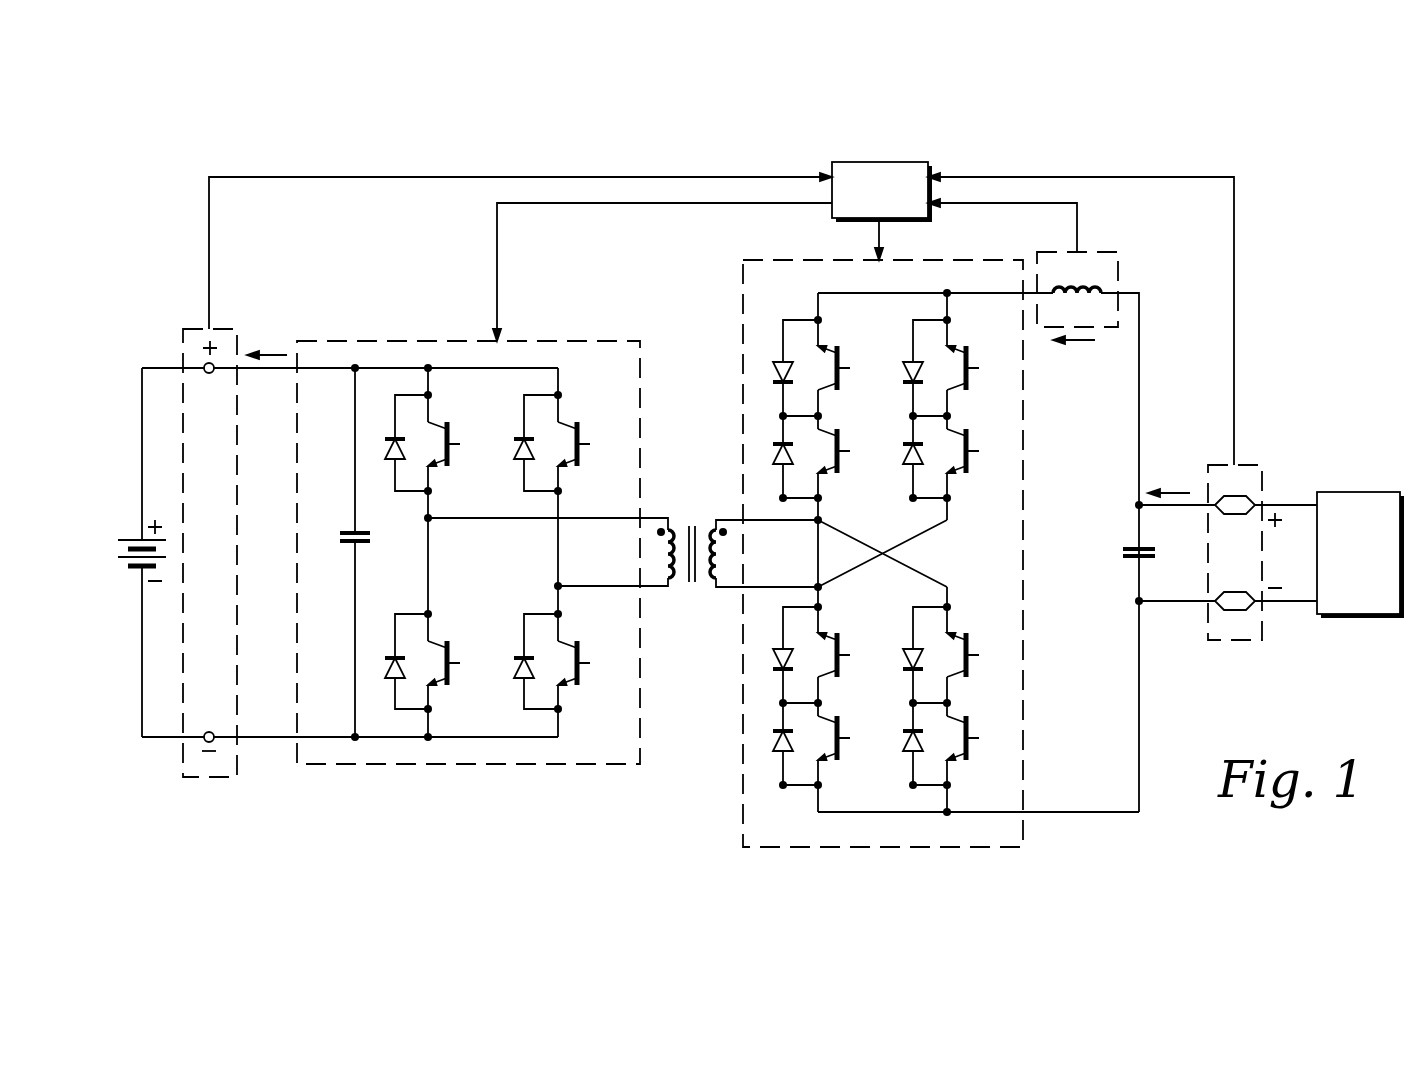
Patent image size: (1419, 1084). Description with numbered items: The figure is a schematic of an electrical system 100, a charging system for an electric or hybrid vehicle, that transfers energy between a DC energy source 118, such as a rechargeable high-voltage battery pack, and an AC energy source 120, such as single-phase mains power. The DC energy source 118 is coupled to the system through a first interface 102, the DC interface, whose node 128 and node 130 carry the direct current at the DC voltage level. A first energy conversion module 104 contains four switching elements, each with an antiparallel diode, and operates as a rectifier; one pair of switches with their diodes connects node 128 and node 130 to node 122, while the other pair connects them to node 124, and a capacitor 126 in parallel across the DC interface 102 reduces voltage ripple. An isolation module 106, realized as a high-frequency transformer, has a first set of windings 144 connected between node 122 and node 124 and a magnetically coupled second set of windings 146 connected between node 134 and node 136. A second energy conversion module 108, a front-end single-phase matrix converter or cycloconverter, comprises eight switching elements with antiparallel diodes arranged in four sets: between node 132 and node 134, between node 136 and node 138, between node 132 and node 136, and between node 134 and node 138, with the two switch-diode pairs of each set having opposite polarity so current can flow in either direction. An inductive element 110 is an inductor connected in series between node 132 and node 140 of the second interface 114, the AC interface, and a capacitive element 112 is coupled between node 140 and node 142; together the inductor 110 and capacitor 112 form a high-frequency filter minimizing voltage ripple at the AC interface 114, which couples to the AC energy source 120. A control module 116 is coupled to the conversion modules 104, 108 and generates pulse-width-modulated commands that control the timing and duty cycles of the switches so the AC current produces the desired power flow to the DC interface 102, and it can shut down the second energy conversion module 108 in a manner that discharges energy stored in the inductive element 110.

The electrical system 100 is at (1278, 238).
The first interface 102 is at (190, 327).
The first energy conversion module 104 is at (578, 341).
The isolation module 106 is at (702, 598).
The second energy conversion module 108 is at (790, 260).
The inductive element 110 is at (1110, 252).
The capacitive element 112 is at (1123, 550).
The second interface 114 is at (1252, 465).
The control module 116 is at (905, 162).
The DC energy source 118 is at (128, 540).
The AC energy source 120 is at (1358, 492).
The node 122 is at (425, 519).
The node 124 is at (556, 586).
The capacitor 126 is at (345, 533).
The node 128 is at (209, 375).
The node 130 is at (209, 731).
The node 132 is at (948, 292).
The node 134 is at (818, 522).
The node 136 is at (818, 585).
The node 138 is at (947, 814).
The node 140 is at (1137, 503).
The node 142 is at (1137, 603).
The first set of windings 144 is at (680, 583).
The second set of windings 146 is at (710, 530).